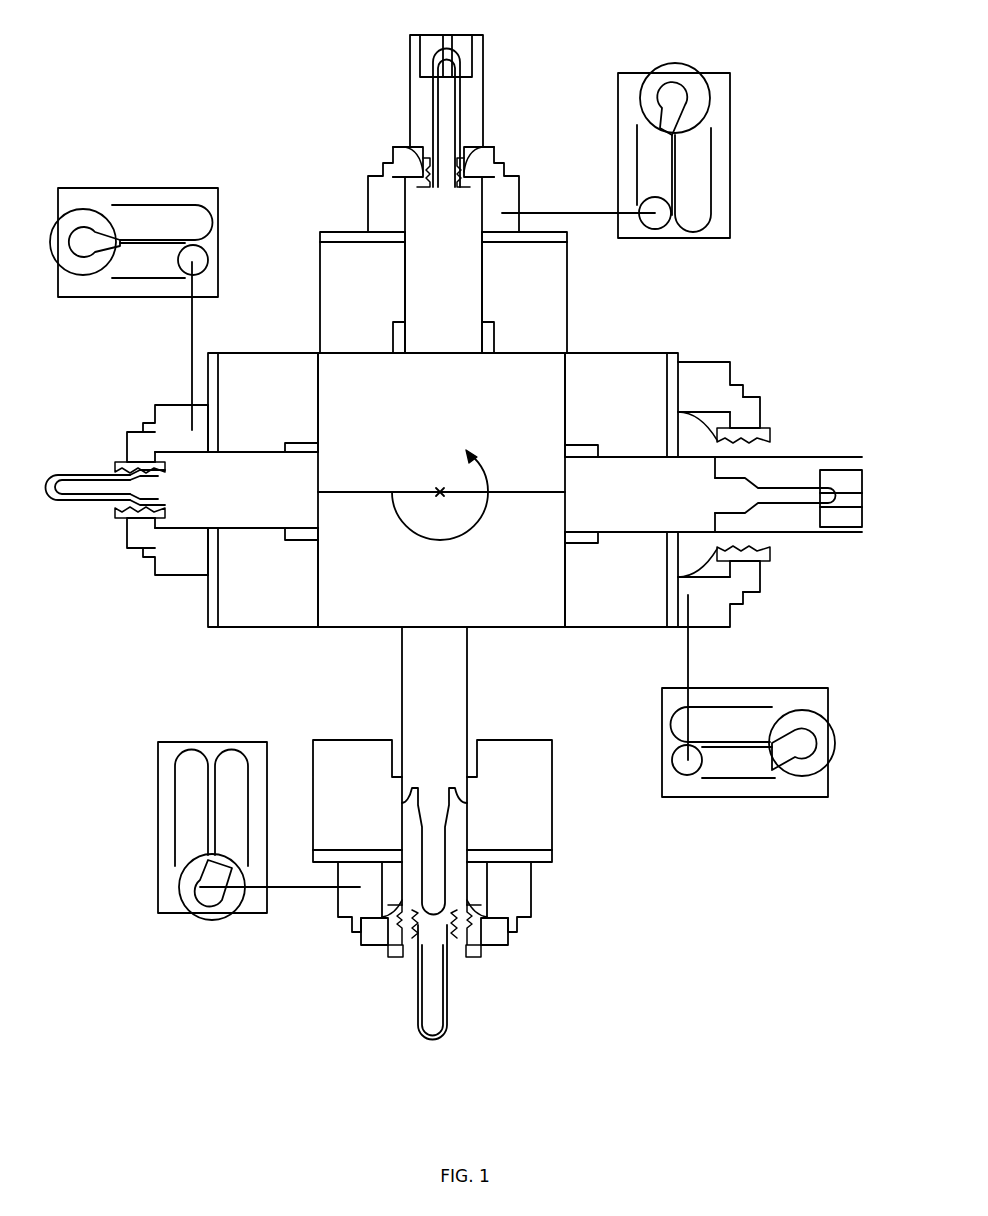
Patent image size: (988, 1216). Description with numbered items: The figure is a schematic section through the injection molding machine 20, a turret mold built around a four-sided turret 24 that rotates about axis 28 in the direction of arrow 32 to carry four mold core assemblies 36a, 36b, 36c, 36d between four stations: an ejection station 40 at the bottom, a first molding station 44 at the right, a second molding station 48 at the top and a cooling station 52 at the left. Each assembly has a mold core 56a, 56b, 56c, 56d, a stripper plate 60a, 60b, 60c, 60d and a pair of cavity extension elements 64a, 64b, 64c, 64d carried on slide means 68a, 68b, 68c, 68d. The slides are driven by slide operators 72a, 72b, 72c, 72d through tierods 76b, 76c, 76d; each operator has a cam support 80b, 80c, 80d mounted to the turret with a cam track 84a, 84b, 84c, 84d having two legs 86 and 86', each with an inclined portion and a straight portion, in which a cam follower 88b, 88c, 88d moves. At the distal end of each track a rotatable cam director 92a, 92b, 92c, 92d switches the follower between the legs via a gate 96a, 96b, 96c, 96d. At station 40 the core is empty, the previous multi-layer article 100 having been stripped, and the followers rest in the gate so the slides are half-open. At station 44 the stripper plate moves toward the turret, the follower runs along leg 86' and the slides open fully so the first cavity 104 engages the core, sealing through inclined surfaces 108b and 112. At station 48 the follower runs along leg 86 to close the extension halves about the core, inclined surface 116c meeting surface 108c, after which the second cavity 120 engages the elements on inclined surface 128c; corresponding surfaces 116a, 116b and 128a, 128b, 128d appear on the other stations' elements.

The injection molding machine 20 is at (246, 945).
The turret 24 is at (528, 632).
The axis 28 is at (440, 488).
The arrow 32 is at (492, 472).
The mold core assembly 36a is at (452, 703).
The mold core assembly 36b is at (640, 500).
The mold core assembly 36c is at (457, 323).
The mold core assembly 36d is at (258, 500).
The ejection station 40 is at (545, 970).
The first molding station 44 is at (775, 622).
The second molding station 48 is at (556, 70).
The cooling station 52 is at (113, 576).
The mold core 56a is at (435, 795).
The mold core 56b is at (742, 500).
The mold core 56c is at (442, 190).
The mold core 56d is at (168, 495).
The stripper plate 60a is at (537, 805).
The stripper plate 60b is at (625, 583).
The stripper plate 60c is at (543, 333).
The stripper plate 60d is at (280, 402).
The cavity extension element 64a is at (375, 945).
The cavity extension element 64b is at (748, 405).
The cavity extension element 64c is at (395, 160).
The cavity extension element 64d is at (135, 435).
The slide means 68a is at (352, 896).
The slide means 68b is at (705, 372).
The slide means 68c is at (372, 190).
The slide means 68d is at (180, 410).
The slide operator 72a is at (140, 836).
The slide operator 72b is at (782, 822).
The slide operator 72c is at (770, 181).
The slide operator 72d is at (162, 138).
The tierod 76b is at (688, 662).
The tierod 76c is at (588, 213).
The tierod 76d is at (192, 332).
The cam support 80b is at (662, 738).
The cam support 80c is at (730, 225).
The cam support 80d is at (218, 238).
The cam track 84a is at (250, 775).
The cam track 84b is at (752, 705).
The cam track 84c is at (718, 135).
The cam track 84d is at (130, 205).
The leg 86 is at (431, 435).
The leg 86' is at (469, 458).
The cam follower 88b is at (690, 778).
The cam follower 88c is at (652, 228).
The cam follower 88d is at (205, 260).
The cam director 92a is at (208, 920).
The cam director 92b is at (800, 718).
The cam director 92c is at (678, 70).
The cam director 92d is at (80, 215).
The gate 96a is at (228, 862).
The gate 96b is at (803, 753).
The gate 96c is at (668, 75).
The gate 96d is at (88, 280).
The multi-layer article 100 is at (447, 1040).
The first cavity 104 is at (812, 468).
The inclined surface 108b is at (712, 470).
The inclined surface 108c is at (470, 195).
The inclined surface 112 is at (730, 478).
The inclined surface 116a is at (388, 915).
The inclined surface 116b is at (710, 430).
The inclined surface 116c is at (415, 160).
The second cavity 120 is at (487, 37).
The inclined surface 128a is at (395, 958).
The inclined surface 128b is at (760, 432).
The inclined surface 128c is at (425, 160).
The inclined surface 128d is at (120, 468).